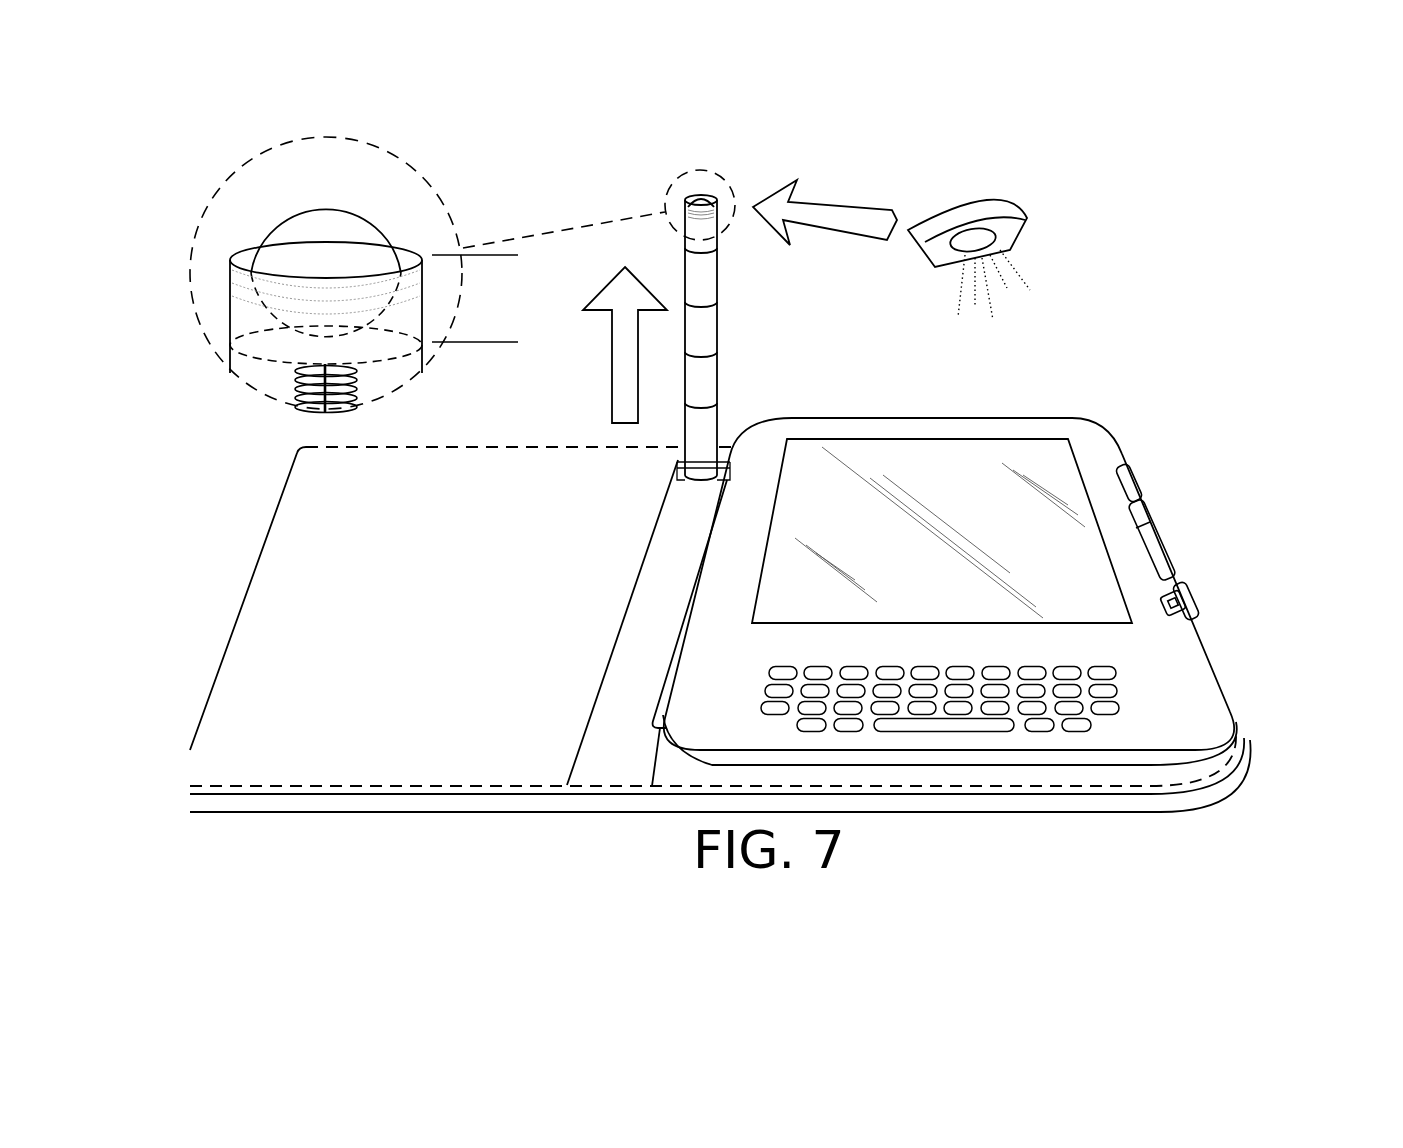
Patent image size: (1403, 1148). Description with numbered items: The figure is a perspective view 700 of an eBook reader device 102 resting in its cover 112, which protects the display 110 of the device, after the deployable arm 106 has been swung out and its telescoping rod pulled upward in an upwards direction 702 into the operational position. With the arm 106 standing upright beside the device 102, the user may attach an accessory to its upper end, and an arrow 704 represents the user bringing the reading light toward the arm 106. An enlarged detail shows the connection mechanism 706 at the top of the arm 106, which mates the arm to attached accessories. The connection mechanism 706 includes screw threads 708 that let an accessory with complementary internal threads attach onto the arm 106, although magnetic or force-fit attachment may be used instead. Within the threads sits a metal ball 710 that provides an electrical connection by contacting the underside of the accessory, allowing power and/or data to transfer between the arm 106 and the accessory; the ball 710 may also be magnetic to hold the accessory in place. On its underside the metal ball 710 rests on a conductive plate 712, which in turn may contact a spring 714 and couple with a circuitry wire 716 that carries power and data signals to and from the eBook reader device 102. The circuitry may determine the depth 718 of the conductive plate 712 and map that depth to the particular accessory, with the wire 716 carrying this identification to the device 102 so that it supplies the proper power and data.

The perspective view 700 is at (1257, 168).
The upwards direction 702 is at (610, 380).
The arrow 704 is at (832, 200).
The connection mechanism 706 is at (665, 186).
The screw threads 708 is at (407, 318).
The metal ball 710 is at (402, 232).
The conductive plate 712 is at (380, 368).
The spring 714 is at (285, 381).
The circuitry wire 716 is at (323, 414).
The depth 718 is at (497, 258).
The deployable arm 106 is at (745, 340).
The display 110 is at (949, 480).
The eBook reader device 102 is at (1185, 513).
The cover 112 is at (270, 836).